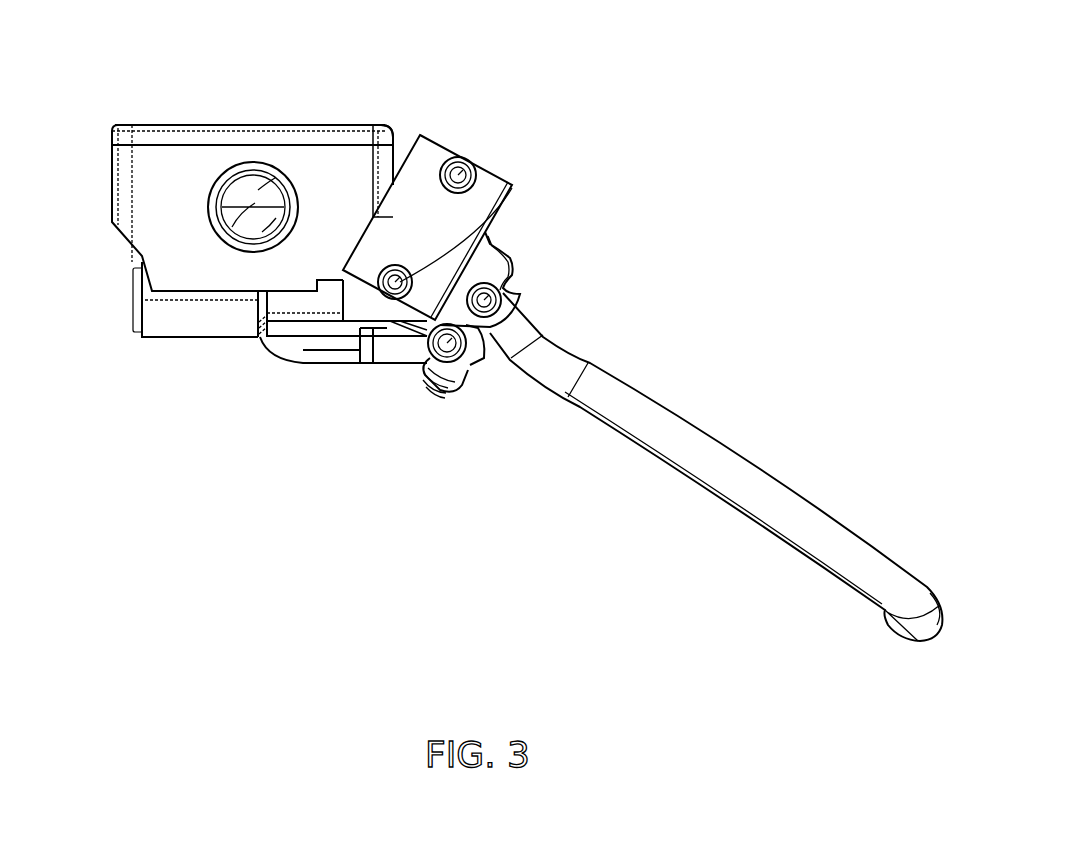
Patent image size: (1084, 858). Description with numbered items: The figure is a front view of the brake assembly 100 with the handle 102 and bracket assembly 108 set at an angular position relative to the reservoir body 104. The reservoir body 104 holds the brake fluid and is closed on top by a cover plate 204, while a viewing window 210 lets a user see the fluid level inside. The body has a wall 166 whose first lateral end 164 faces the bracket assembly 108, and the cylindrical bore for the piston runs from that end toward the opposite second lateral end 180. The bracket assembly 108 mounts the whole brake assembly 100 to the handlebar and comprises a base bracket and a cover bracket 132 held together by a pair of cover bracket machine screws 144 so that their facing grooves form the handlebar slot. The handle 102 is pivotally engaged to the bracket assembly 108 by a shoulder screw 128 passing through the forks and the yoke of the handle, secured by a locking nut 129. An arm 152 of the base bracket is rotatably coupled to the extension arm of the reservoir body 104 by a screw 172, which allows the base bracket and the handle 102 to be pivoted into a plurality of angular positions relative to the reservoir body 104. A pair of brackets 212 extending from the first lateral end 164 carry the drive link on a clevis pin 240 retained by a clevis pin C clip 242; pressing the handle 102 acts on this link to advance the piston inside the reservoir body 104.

The brake assembly 100 is at (527, 62).
The handle 102 is at (628, 400).
The reservoir body 104 is at (155, 215).
The bracket assembly 108 is at (430, 138).
The shoulder screw 128 is at (432, 387).
The locking nut 129 is at (463, 373).
The cover bracket 132 is at (500, 211).
The cover bracket machine screws 144 is at (480, 166).
The arm 152 is at (492, 260).
The first lateral end 164 is at (398, 137).
The wall 166 is at (148, 180).
The screw 172 is at (497, 293).
The second lateral end 180 is at (112, 195).
The cover plate 204 is at (182, 125).
The viewing window 210 is at (218, 230).
The pair of brackets 212 is at (370, 355).
The clevis pin 240 is at (435, 380).
The clevis pin C clip 242 is at (440, 348).